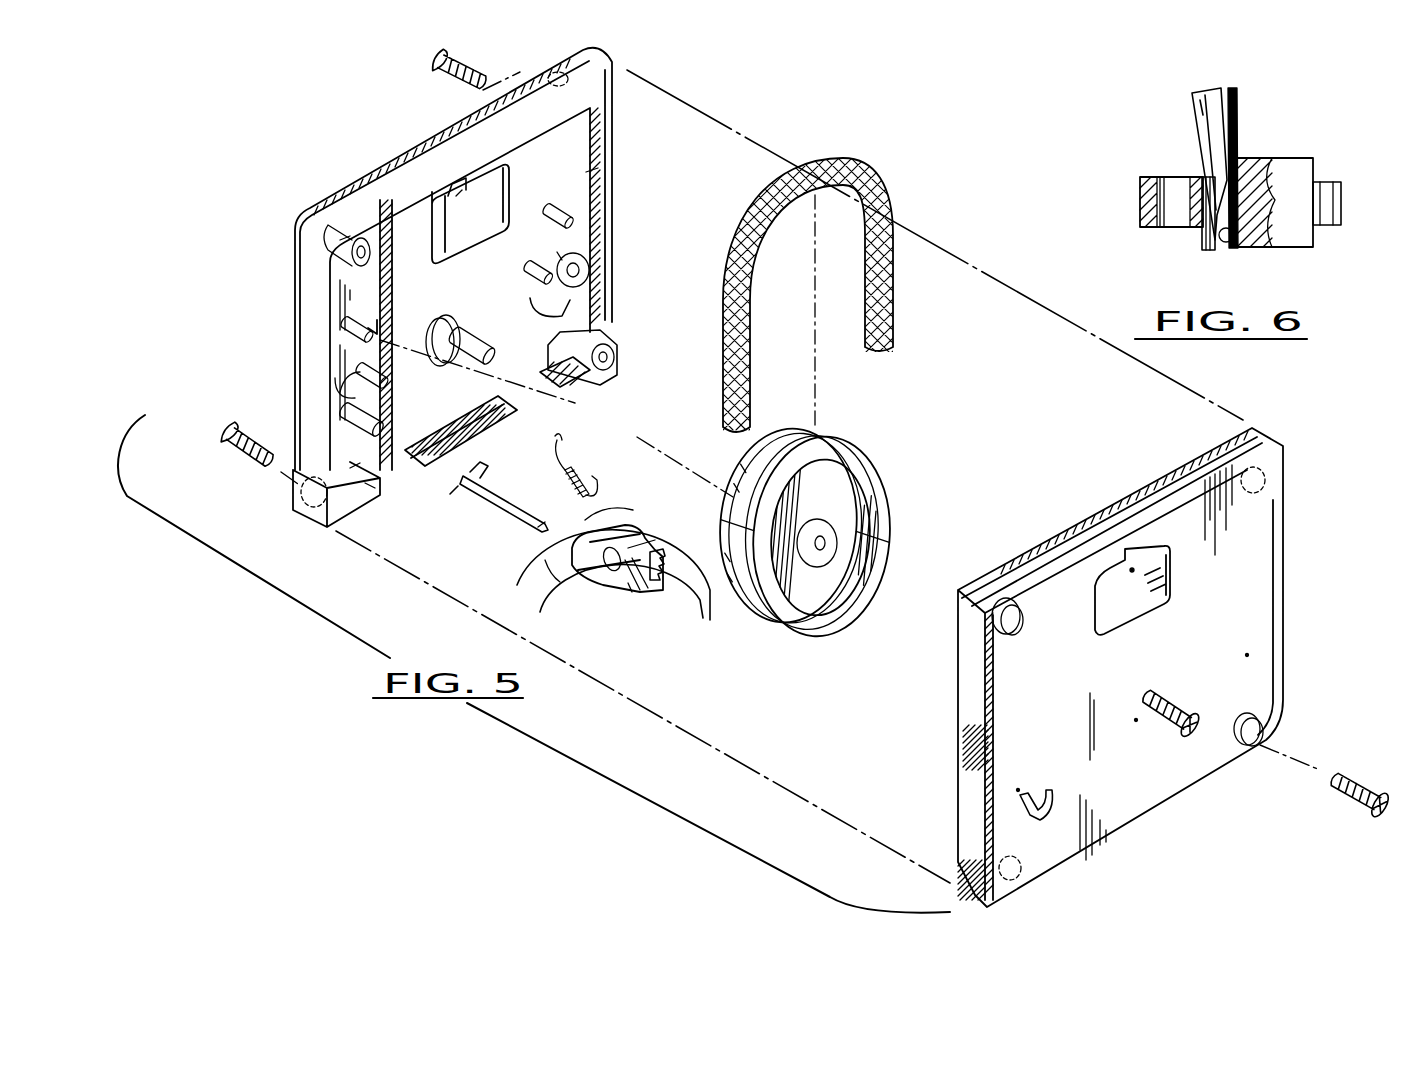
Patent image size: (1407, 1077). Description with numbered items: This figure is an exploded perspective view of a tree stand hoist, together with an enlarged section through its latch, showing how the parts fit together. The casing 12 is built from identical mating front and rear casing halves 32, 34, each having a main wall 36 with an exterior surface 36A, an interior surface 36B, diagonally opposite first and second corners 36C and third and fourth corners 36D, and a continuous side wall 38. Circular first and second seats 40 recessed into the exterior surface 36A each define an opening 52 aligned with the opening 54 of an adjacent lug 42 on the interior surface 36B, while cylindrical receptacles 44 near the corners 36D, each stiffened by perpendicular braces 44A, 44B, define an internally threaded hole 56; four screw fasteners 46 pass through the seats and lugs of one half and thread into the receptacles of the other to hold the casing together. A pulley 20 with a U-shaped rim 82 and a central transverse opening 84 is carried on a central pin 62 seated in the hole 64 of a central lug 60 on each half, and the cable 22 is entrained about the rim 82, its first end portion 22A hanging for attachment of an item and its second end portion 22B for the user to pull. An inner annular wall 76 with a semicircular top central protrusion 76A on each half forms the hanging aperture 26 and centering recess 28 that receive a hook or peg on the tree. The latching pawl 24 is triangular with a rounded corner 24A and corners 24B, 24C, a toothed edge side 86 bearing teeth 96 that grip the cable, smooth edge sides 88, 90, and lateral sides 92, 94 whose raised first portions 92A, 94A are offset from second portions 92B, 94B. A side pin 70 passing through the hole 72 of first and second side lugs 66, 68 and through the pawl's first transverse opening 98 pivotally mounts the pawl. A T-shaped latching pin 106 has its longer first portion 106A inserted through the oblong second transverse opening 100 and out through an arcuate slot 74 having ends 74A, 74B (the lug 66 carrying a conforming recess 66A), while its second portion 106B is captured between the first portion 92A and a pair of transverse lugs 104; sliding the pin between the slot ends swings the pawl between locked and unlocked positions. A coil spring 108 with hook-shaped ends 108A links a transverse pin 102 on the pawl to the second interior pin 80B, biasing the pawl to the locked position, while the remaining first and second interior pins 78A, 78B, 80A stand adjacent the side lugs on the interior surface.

In FIG. 5, the casing 12 is at (652, 80).
In FIG. 5, the pulley 20 is at (882, 480).
In FIG. 5, the cable 22 is at (862, 168).
In FIG. 5, the first end portion 22A is at (895, 318).
In FIG. 5, the second end portion 22B is at (752, 405).
In FIG. 5, the latching pawl 24 is at (623, 603).
In FIG. 5, the rounded corner 24A is at (565, 592).
In FIG. 6, the rounded corner 24A is at (1140, 196).
In FIG. 5, the corner 24B is at (633, 605).
In FIG. 5, the corner 24C is at (705, 600).
In FIG. 5, the aperture 26 is at (462, 195).
In FIG. 5, the centering recess 28 is at (455, 178).
In FIG. 5, the front casing half 32 is at (1274, 600).
In FIG. 5, the rear casing half 34 is at (300, 330).
In FIG. 5, the main wall 36 is at (585, 170).
In FIG. 5, the exterior surface 36A is at (1012, 714).
In FIG. 5, the interior surface 36B is at (377, 330).
In FIG. 5, the first and second corners 36C is at (601, 55).
In FIG. 5, the third and fourth corners 36D is at (313, 212).
In FIG. 5, the side wall 38 is at (352, 187).
In FIG. 5, the first and second seats 40 is at (1012, 608).
In FIG. 5, the first and second lugs 42 is at (558, 66).
In FIG. 5, the first and second receptacles 44 is at (355, 262).
In FIG. 5, the brace 44A is at (348, 250).
In FIG. 5, the brace 44B is at (352, 235).
In FIG. 5, the fasteners 46 is at (431, 62).
In FIG. 5, the opening 52 is at (1000, 620).
In FIG. 5, the opening 54 is at (565, 88).
In FIG. 5, the internally threaded hole 56 is at (360, 266).
In FIG. 5, the central lug 60 is at (442, 322).
In FIG. 5, the central pin 62 is at (480, 348).
In FIG. 5, the hole 64 is at (430, 344).
In FIG. 5, the first side lug 66 is at (590, 262).
In FIG. 5, the recess 66A is at (557, 254).
In FIG. 5, the second side lug 68 is at (355, 386).
In FIG. 5, the side pin 70 is at (382, 420).
In FIG. 5, the hole 72 is at (590, 272).
In FIG. 5, the slot 74 is at (600, 335).
In FIG. 6, the slot 74 is at (1250, 190).
In FIG. 5, the slot end 74A is at (535, 300).
In FIG. 5, the slot end 74B is at (570, 303).
In FIG. 5, the inner annular wall 76 is at (432, 246).
In FIG. 5, the top central protrusion 76A is at (447, 168).
In FIG. 5, the first interior pin 78A is at (528, 268).
In FIG. 5, the first interior pin 78B is at (575, 215).
In FIG. 5, the second interior pin 80A is at (358, 372).
In FIG. 5, the second interior pin 80B is at (343, 326).
In FIG. 5, the rim 82 is at (848, 592).
In FIG. 5, the central transverse opening 84 is at (834, 540).
In FIG. 5, the edge side 86 is at (660, 572).
In FIG. 5, the edge side 88 is at (648, 543).
In FIG. 5, the edge side 90 is at (618, 586).
In FIG. 5, the lateral side 92 is at (598, 532).
In FIG. 6, the lateral side 92 is at (1272, 252).
In FIG. 6, the first portion 92A is at (1315, 250).
In FIG. 6, the second portion 92B is at (1150, 228).
In FIG. 5, the lateral side 94 is at (642, 606).
In FIG. 6, the lateral side 94 is at (1262, 160).
In FIG. 6, the first portion 94A is at (1305, 160).
In FIG. 6, the second portion 94B is at (1152, 177).
In FIG. 5, the teeth 96 is at (646, 595).
In FIG. 6, the teeth 96 is at (1343, 200).
In FIG. 5, the first transverse opening 98 is at (604, 565).
In FIG. 6, the first transverse opening 98 is at (1172, 215).
In FIG. 5, the second transverse opening 100 is at (628, 592).
In FIG. 6, the second transverse opening 100 is at (1210, 178).
In FIG. 5, the transverse pin 102 is at (620, 526).
In FIG. 5, the transverse lugs 104 is at (545, 566).
In FIG. 6, the transverse lugs 104 is at (1205, 252).
In FIG. 5, the latching pin 106 is at (472, 480).
In FIG. 6, the latching pin 106 is at (1237, 110).
In FIG. 5, the first portion 106A is at (532, 523).
In FIG. 6, the first portion 106A is at (1203, 92).
In FIG. 5, the second portion 106B is at (470, 490).
In FIG. 6, the second portion 106B is at (1228, 243).
In FIG. 5, the spring 108 is at (563, 475).
In FIG. 5, the ends 108A is at (556, 442).